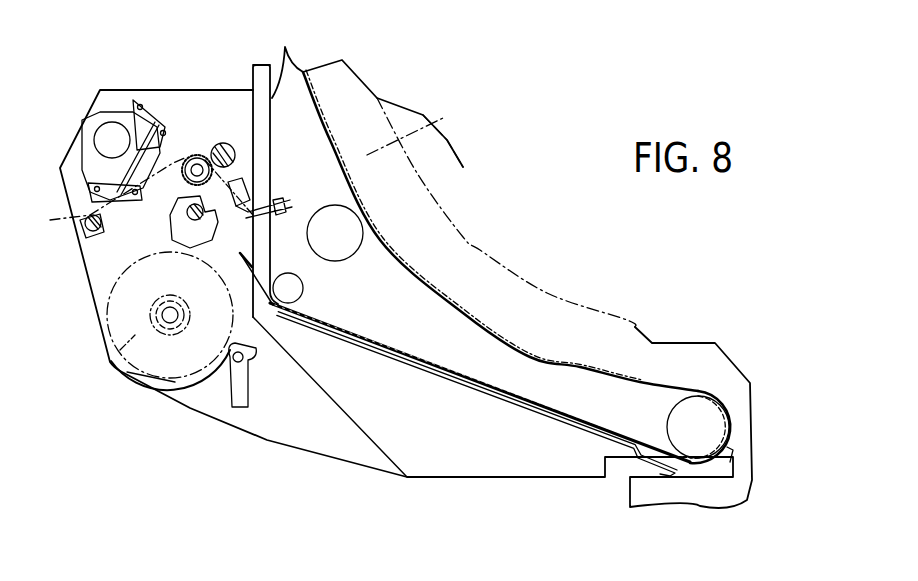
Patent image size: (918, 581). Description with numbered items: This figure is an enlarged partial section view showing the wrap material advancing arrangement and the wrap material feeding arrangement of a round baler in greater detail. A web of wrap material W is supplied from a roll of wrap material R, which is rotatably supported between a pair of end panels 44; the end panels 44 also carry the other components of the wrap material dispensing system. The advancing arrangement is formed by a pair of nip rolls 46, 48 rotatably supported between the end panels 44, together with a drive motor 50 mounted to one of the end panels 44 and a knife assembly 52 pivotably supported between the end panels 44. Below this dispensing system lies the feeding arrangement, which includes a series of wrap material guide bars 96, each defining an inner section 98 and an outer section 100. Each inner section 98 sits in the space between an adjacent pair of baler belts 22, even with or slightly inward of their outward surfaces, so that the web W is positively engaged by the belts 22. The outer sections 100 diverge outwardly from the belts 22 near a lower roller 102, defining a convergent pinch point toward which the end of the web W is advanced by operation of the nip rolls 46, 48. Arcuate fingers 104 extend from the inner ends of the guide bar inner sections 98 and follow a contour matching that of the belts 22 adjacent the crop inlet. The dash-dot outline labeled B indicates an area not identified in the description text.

The belts 22 is at (285, 64).
The end panels 44 is at (80, 178).
The nip roll 46 is at (207, 155).
The nip roll 48 is at (223, 145).
The drive motor 50 is at (80, 130).
The knife assembly 52 is at (147, 232).
The wrap material guide bars 96 is at (348, 347).
The inner section 98 is at (390, 358).
The outer section 100 is at (262, 283).
The lower roller 102 is at (302, 288).
The arcuate fingers 104 is at (713, 462).
The web of wrap material W is at (110, 197).
The roll of wrap material R is at (110, 353).
The bin B is at (443, 118).